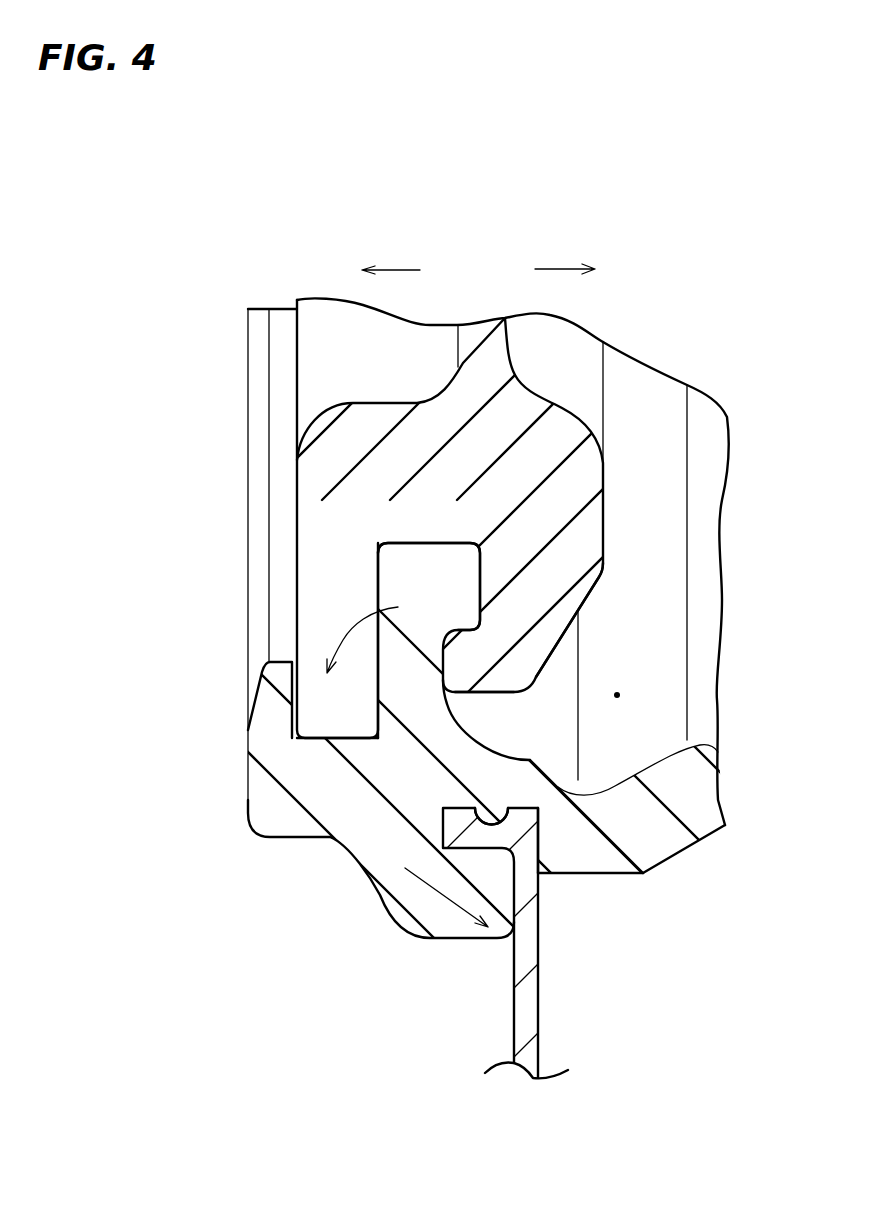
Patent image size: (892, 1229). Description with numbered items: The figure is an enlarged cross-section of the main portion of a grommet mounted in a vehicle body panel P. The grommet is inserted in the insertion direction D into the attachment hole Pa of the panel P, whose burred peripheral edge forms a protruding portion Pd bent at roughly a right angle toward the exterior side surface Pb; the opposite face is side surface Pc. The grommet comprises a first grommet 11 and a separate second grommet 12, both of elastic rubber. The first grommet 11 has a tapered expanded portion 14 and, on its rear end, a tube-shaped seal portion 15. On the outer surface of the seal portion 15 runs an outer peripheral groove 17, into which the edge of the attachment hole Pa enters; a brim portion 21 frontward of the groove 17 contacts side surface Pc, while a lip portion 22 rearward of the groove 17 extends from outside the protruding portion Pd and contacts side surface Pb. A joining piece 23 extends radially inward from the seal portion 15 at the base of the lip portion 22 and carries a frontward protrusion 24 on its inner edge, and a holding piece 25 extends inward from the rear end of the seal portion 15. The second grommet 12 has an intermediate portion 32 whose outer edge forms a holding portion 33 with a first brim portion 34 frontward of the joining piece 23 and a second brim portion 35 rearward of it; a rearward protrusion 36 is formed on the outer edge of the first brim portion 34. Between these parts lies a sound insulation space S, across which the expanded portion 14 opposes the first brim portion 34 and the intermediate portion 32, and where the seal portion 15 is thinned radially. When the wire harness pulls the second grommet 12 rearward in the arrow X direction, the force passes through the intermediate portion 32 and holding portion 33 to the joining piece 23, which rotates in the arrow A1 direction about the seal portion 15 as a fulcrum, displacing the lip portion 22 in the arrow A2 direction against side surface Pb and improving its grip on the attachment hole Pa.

The first grommet 11 is at (686, 868).
The second grommet 12 is at (284, 442).
The expanded portion 14 is at (708, 705).
The seal portion 15 is at (595, 873).
The outer peripheral groove 17 is at (516, 808).
The brim portion 21 is at (563, 855).
The lip portion 22 is at (450, 922).
The joining piece 23 is at (395, 582).
The protrusion 24 is at (465, 568).
The holding piece 25 is at (267, 700).
The intermediate portion 32 is at (468, 337).
The holding portion 33 is at (297, 497).
The first brim portion 34 is at (552, 598).
The second brim portion 35 is at (307, 674).
The protrusion 36 is at (465, 668).
The vehicle body panel P is at (538, 988).
The attachment hole Pa is at (455, 822).
The side surface Pb is at (514, 1021).
The side surface Pc is at (538, 1021).
The protruding portion Pd is at (455, 836).
The sound insulation space S is at (617, 698).
The arrow A1 direction A1 is at (352, 633).
The arrow A2 direction A2 is at (432, 888).
The arrow X direction X is at (391, 256).
The insertion direction D is at (565, 256).